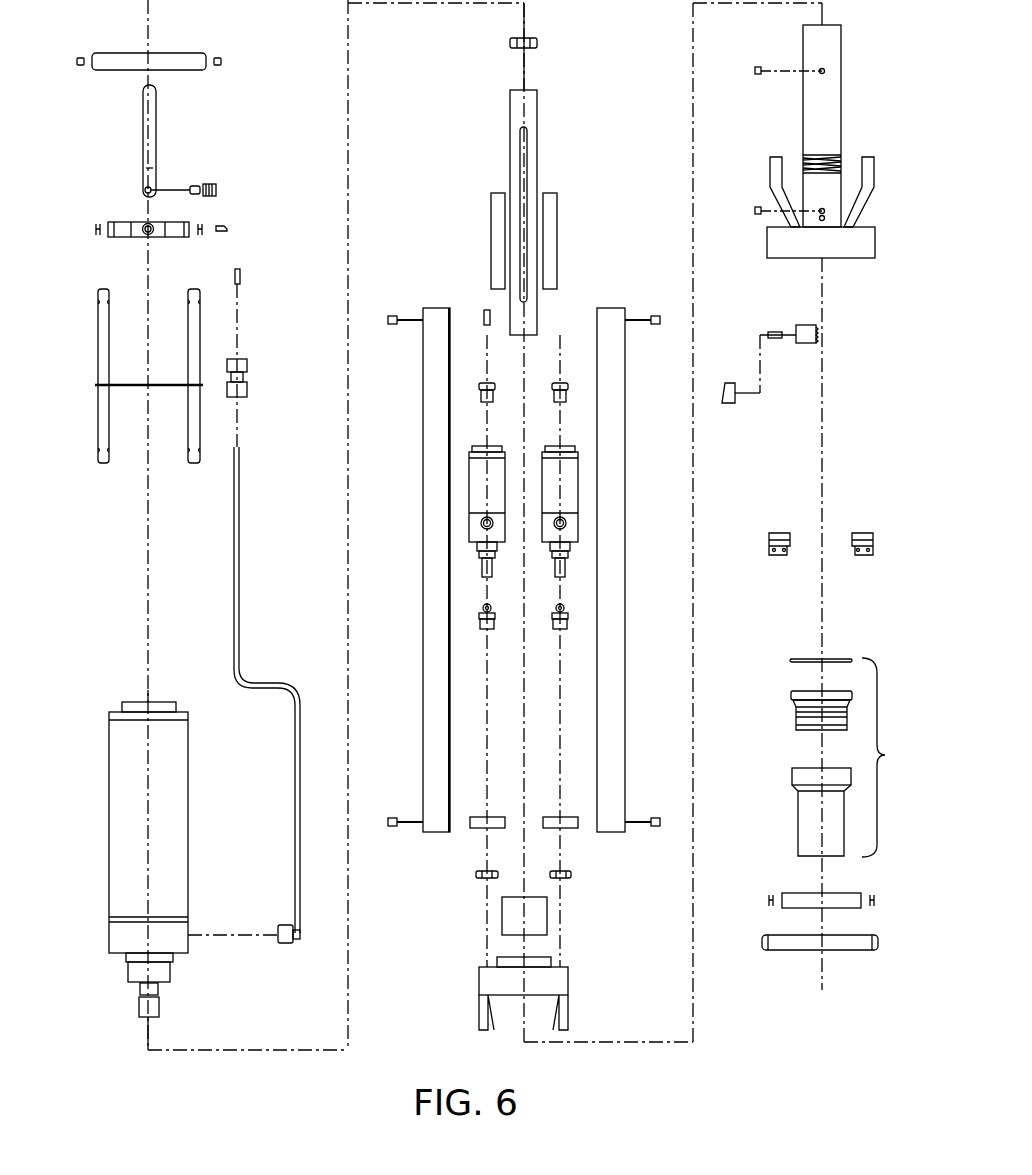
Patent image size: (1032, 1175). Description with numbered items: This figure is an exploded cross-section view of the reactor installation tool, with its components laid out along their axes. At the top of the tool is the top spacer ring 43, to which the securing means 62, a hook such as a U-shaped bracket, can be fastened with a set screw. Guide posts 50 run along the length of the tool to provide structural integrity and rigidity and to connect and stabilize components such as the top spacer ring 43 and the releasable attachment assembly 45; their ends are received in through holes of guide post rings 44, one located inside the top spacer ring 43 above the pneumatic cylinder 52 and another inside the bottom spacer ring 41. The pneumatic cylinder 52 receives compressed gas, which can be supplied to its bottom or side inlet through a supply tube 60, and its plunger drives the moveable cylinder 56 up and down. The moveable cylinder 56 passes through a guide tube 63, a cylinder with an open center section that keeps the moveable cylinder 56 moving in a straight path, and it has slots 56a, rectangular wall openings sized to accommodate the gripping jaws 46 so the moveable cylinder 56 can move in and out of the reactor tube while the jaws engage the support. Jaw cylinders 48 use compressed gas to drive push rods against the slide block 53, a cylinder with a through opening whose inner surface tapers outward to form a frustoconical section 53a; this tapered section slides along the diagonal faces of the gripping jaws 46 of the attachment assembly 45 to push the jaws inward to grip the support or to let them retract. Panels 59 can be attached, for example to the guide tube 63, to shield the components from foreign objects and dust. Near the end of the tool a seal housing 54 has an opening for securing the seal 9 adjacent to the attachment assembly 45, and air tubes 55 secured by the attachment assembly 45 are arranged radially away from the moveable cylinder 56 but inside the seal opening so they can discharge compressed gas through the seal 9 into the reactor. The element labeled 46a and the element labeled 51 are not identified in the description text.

The seal 9 is at (850, 757).
The bottom spacer ring 41 is at (853, 950).
The top spacer ring 43 is at (175, 56).
The guide post rings 44 is at (120, 222).
The releasable attachment assembly 45 is at (878, 222).
The gripping jaws 46 is at (804, 325).
The switch actuator 46a is at (730, 382).
The jaw cylinders 48 is at (570, 487).
The guide posts 50 is at (98, 315).
The cross bar 51 is at (133, 384).
The pneumatic cylinder 52 is at (120, 826).
The slide block 53 is at (568, 976).
The frustoconical section 53a is at (558, 1004).
The seal housing 54 is at (867, 535).
The air tubes 55 is at (866, 159).
The moveable cylinder 56 is at (533, 107).
The slots 56a is at (527, 170).
The panels 59 is at (619, 397).
The supply tube 60 is at (269, 688).
The securing means 62 is at (157, 134).
The guide tube 63 is at (834, 53).